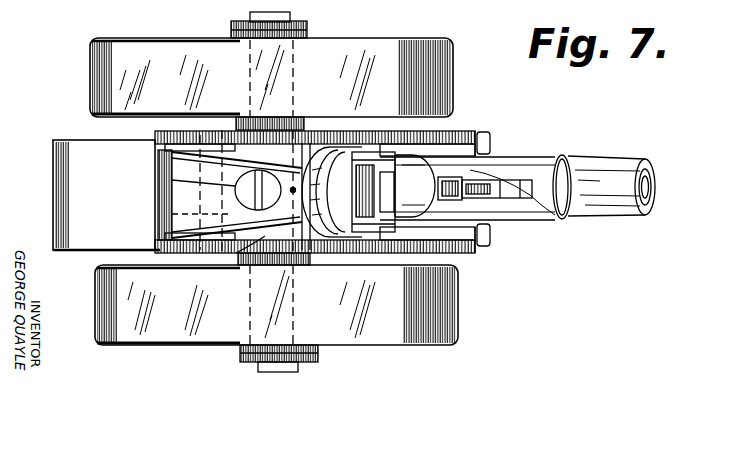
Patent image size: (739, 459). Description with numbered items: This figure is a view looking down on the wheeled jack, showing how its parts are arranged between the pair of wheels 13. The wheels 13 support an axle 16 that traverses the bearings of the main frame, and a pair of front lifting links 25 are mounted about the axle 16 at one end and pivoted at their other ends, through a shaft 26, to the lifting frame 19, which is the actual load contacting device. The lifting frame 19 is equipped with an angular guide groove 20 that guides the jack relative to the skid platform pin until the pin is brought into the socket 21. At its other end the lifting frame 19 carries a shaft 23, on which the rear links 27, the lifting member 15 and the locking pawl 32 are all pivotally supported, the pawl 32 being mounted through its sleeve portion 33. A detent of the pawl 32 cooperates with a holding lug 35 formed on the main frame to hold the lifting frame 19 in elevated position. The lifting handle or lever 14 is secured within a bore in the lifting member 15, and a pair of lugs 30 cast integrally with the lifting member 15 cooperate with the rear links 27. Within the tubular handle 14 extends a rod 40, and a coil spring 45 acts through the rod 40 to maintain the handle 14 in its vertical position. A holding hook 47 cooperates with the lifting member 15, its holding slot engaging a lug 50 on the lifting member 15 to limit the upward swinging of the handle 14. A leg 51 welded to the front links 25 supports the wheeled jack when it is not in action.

The wheels 13 is at (93, 68).
The lifting handle or lever 14 is at (613, 160).
The lifting member 15 is at (520, 228).
The axle 16 is at (300, 320).
The lifting frame 19 is at (312, 158).
The angular guide groove 20 is at (185, 160).
The socket 21 is at (235, 190).
The shaft 23 is at (395, 218).
The front lifting links 25 is at (157, 133).
The shaft 26 is at (172, 214).
The rear links 27 is at (455, 132).
The lugs 30 is at (490, 140).
The locking pawl 32 is at (262, 240).
The sleeve portion 33 is at (385, 248).
The holding lug 35 is at (258, 148).
The rod 40 is at (528, 220).
The coil spring 45 is at (655, 181).
The holding hook 47 is at (458, 178).
The lug 50 is at (575, 158).
The leg 51 is at (58, 164).